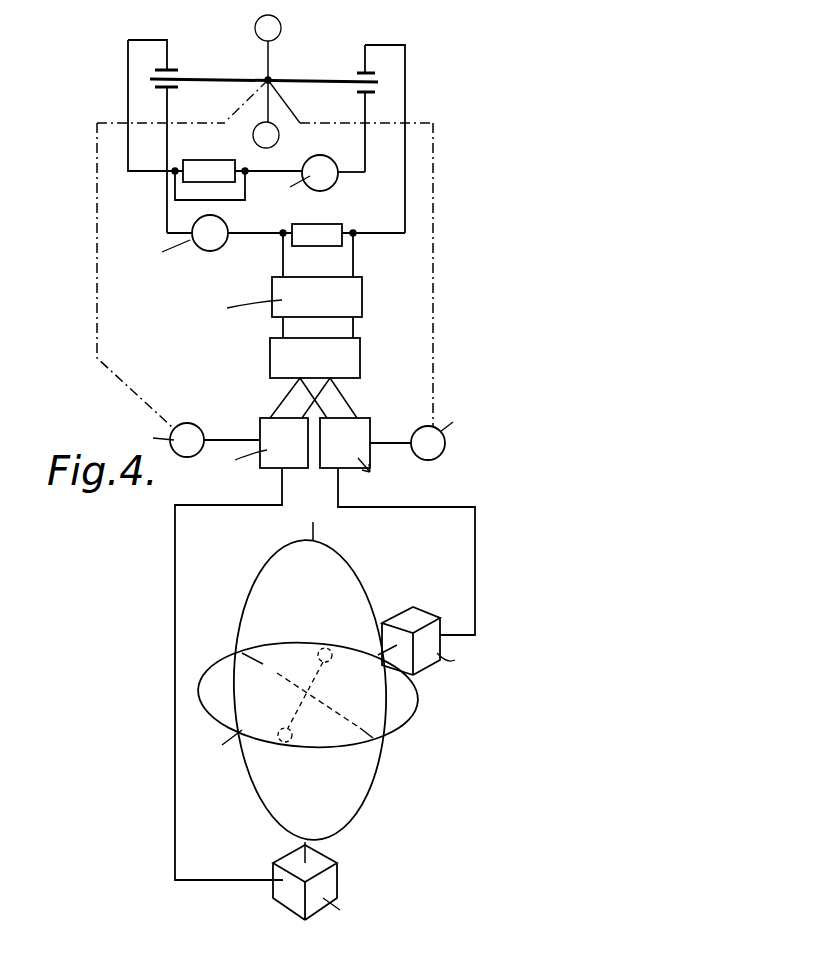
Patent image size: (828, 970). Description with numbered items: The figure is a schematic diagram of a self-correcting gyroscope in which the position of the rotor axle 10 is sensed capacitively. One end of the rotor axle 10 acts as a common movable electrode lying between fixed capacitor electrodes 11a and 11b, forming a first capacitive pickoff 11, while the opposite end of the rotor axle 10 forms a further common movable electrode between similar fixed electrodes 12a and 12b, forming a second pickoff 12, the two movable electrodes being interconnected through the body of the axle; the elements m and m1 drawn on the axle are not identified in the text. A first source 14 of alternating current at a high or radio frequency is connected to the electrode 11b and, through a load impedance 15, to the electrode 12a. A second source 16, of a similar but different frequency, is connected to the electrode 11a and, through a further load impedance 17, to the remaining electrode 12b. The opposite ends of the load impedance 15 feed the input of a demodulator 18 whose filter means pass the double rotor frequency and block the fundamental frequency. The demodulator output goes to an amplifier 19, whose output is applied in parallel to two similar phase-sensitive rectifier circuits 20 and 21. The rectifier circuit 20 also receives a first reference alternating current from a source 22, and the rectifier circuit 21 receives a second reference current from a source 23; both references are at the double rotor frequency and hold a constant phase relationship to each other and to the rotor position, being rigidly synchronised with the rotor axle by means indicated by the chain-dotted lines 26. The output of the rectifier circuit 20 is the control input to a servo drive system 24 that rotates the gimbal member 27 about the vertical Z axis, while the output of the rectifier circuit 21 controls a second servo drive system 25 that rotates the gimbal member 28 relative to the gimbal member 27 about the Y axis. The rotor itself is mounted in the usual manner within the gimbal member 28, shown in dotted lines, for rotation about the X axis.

The rotor axle 10 is at (322, 78).
The left capacitor pickoff 11 is at (186, 73).
The fixed capacitor electrode 11a is at (178, 70).
The fixed capacitor electrode 11b is at (178, 88).
The right capacitor pickoff 12 is at (352, 60).
The fixed capacitor electrode 12a is at (370, 72).
The fixed capacitor electrode 12b is at (373, 95).
The first source of alternating current 14 is at (208, 242).
The load impedance 15 is at (329, 227).
The second source of alternating current 16 is at (322, 176).
The further load impedance 17 is at (210, 163).
The demodulator 18 is at (340, 300).
The amplifier 19 is at (350, 362).
The phase-sensitive rectifier circuit 20 is at (260, 420).
The phase-sensitive rectifier circuit 21 is at (347, 428).
The reference alternating current source 22 is at (187, 426).
The reference alternating current source 23 is at (445, 443).
The servo drive system 24 is at (327, 883).
The second servo drive system 25 is at (413, 607).
The chain-dotted lines 26 is at (96, 285).
The gimbal member 27 is at (367, 783).
The gimbal member 28 is at (417, 704).
The motor m is at (281, 28).
The motor m1 is at (268, 148).